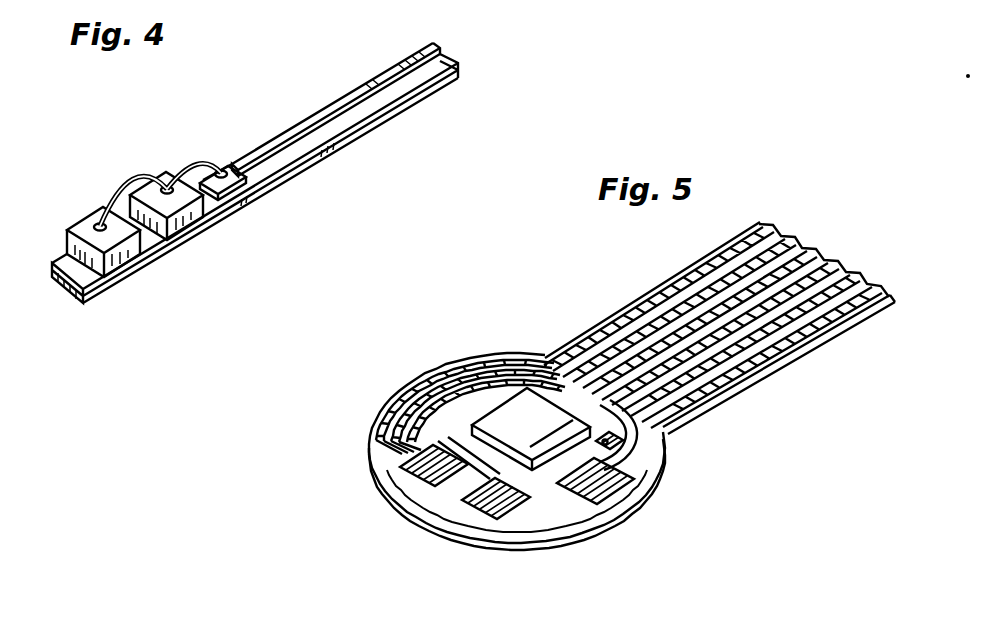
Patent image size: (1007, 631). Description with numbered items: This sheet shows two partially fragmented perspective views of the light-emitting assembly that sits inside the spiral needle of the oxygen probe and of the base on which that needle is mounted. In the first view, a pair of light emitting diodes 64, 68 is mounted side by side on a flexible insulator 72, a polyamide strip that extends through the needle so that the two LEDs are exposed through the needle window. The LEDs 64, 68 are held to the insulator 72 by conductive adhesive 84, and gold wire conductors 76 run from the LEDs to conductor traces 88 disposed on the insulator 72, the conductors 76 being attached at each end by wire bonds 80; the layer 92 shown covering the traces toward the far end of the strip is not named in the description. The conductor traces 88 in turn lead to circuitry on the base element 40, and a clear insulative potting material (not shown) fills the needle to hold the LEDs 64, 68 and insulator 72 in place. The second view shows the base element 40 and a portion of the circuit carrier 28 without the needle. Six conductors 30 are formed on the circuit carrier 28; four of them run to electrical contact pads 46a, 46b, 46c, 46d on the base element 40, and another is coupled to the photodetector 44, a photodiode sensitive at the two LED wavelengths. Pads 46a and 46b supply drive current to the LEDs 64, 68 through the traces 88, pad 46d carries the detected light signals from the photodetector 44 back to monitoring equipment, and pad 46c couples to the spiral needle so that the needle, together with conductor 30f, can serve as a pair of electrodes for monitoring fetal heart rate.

In FIG. 4, the light emitting diode 64 is at (70, 220).
In FIG. 4, the light emitting diode 68 is at (207, 205).
In FIG. 4, the flexible insulator 72 is at (358, 142).
In FIG. 4, the conductors 76 is at (125, 181).
In FIG. 4, the wire bonds 80 is at (99, 226).
In FIG. 4, the conductive adhesive 84 is at (167, 232).
In FIG. 4, the conductor traces 88 is at (410, 68).
In FIG. 4, the insulating cover layer 92 is at (300, 118).
In FIG. 5, the circuit carrier 28 is at (847, 318).
In FIG. 5, the conductors 30 is at (680, 300).
In FIG. 5, the conductor 30f is at (760, 365).
In FIG. 5, the base element 40 is at (388, 498).
In FIG. 5, the photodetector 44 is at (468, 420).
In FIG. 5, the electrical contact pad 46a is at (430, 490).
In FIG. 5, the electrical contact pad 46b is at (492, 518).
In FIG. 5, the electrical contact pad 46c is at (591, 507).
In FIG. 5, the electrical contact pad 46d is at (622, 444).